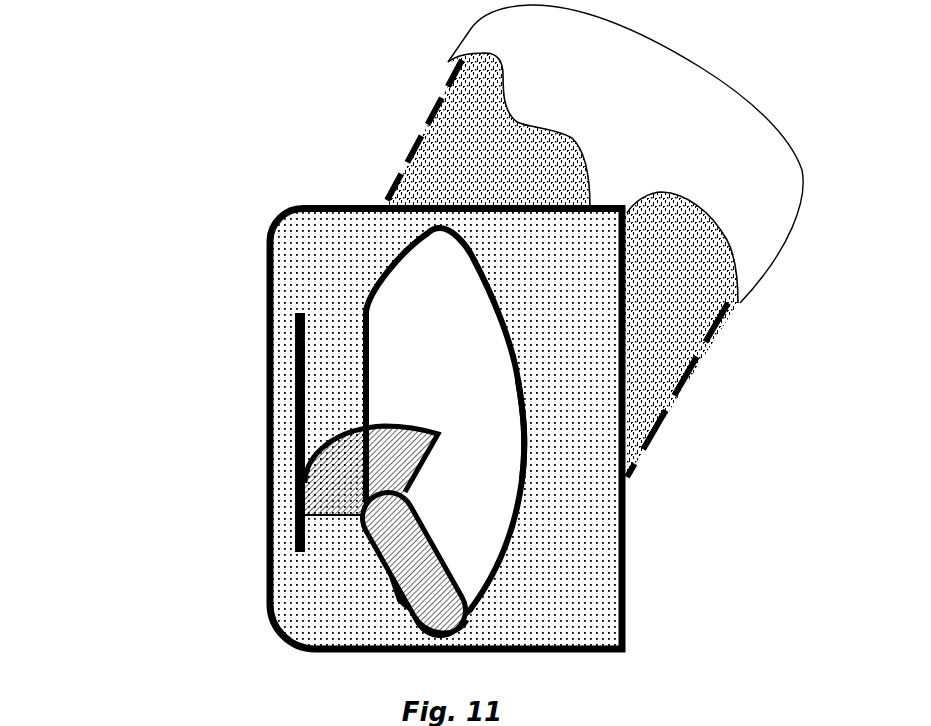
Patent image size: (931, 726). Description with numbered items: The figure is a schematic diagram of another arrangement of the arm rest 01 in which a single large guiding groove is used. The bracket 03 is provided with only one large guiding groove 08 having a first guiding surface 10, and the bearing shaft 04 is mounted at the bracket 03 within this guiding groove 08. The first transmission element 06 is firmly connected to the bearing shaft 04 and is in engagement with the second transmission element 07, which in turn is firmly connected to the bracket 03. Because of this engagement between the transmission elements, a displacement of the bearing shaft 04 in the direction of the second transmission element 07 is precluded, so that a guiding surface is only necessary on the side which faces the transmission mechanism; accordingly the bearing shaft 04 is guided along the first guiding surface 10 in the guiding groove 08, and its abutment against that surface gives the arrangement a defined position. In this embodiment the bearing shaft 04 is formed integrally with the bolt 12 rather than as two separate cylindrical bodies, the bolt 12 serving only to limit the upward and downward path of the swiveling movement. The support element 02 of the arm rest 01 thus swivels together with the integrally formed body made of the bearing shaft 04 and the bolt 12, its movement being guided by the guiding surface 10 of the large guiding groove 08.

The arm rest 01 is at (392, 436).
The support element 02 is at (458, 152).
The bracket 03 is at (577, 602).
The bearing shaft 04 is at (385, 524).
The first transmission element 06 is at (347, 503).
The second transmission element 07 is at (295, 377).
The first guiding groove 08 is at (393, 358).
The first guiding surface 10 is at (513, 447).
The bolt 12 is at (438, 601).